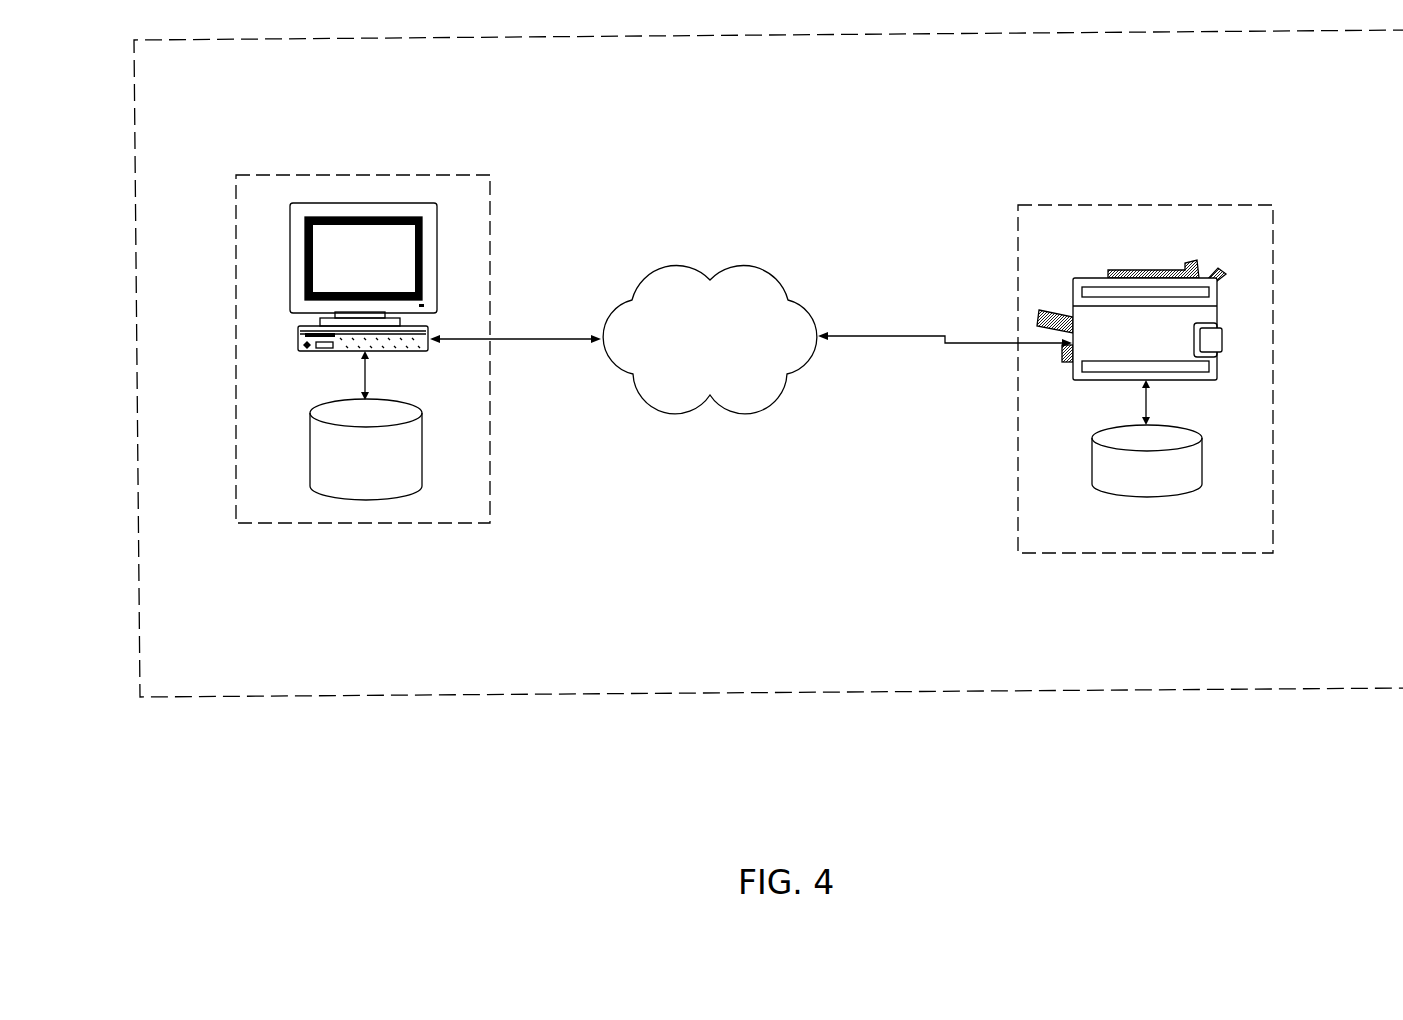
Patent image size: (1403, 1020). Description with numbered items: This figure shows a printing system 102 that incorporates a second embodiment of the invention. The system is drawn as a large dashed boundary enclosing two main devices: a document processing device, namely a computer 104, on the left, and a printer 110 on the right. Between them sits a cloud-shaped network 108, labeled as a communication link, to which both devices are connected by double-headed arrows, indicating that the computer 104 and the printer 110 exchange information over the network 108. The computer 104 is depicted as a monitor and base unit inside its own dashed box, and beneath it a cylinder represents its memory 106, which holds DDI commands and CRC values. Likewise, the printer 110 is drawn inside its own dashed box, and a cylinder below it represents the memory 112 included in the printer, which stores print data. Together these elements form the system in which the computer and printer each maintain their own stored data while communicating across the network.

The printing system 102 is at (768, 348).
The computer 104 is at (343, 175).
The memory 106 is at (310, 452).
The network 108 is at (678, 412).
The printer 110 is at (1095, 205).
The memory 112 is at (1092, 466).